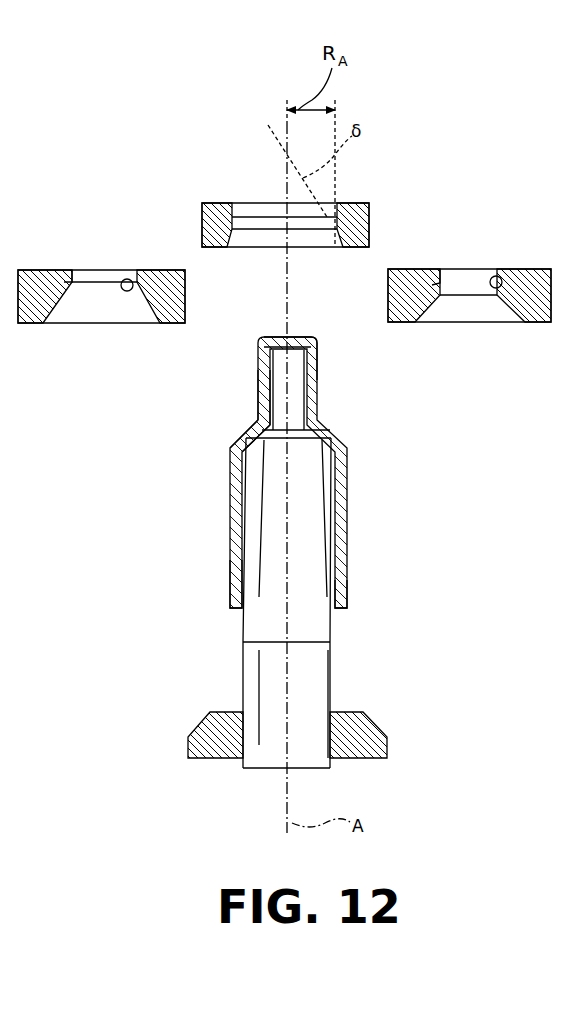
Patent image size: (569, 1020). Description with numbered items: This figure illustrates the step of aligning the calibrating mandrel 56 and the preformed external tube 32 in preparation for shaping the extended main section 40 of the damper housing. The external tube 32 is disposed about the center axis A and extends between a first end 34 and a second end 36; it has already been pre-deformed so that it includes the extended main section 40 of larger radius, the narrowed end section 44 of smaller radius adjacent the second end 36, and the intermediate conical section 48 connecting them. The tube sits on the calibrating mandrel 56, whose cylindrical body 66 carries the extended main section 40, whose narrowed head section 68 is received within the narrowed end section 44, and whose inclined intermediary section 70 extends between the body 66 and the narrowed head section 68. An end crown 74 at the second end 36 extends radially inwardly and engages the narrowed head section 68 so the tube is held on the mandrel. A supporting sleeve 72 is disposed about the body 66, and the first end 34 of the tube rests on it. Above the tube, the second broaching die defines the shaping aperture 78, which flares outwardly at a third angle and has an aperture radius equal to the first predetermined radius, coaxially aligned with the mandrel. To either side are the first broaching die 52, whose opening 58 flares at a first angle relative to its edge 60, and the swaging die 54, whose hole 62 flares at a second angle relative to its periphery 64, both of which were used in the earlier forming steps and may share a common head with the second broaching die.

The external tube 32 is at (226, 531).
The first end 34 is at (342, 610).
The second end 36 is at (298, 337).
The extended main section 40 is at (229, 576).
The narrowed end section 44 is at (262, 396).
The intermediate conical section 48 is at (240, 446).
The first broaching die 52 is at (186, 298).
The swaging die 54 is at (388, 308).
The calibrating mandrel 56 is at (243, 771).
The opening 58 is at (128, 284).
The edge 60 is at (72, 282).
The hole 62 is at (497, 281).
The periphery 64 is at (420, 272).
The body 66 is at (322, 762).
The narrowed head section 68 is at (300, 382).
The intermediary section 70 is at (303, 425).
The supporting sleeve 72 is at (378, 755).
The end crown 74 is at (314, 346).
The shaping aperture 78 is at (255, 219).